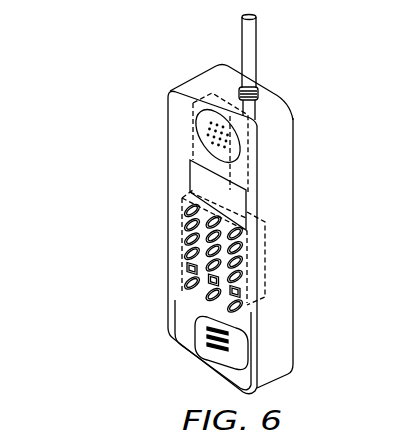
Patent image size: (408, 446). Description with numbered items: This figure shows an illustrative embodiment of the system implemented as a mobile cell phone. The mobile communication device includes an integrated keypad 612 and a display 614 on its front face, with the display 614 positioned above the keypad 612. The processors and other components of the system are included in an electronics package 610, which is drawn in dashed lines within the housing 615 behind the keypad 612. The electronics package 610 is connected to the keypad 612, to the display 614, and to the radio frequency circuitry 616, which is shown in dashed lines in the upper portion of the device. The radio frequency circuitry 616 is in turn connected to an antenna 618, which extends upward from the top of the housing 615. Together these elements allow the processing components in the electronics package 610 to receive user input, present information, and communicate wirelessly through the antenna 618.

The electronics package 610 is at (262, 270).
The keypad 612 is at (183, 243).
The display 614 is at (190, 190).
The housing 615 is at (283, 348).
The radio frequency (RF) circuitry 616 is at (190, 150).
The antenna 618 is at (257, 57).